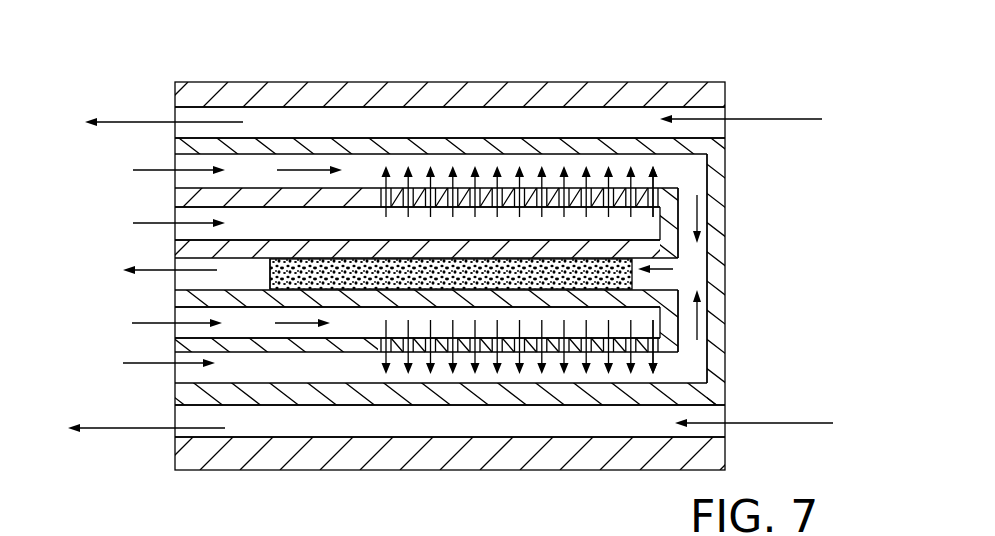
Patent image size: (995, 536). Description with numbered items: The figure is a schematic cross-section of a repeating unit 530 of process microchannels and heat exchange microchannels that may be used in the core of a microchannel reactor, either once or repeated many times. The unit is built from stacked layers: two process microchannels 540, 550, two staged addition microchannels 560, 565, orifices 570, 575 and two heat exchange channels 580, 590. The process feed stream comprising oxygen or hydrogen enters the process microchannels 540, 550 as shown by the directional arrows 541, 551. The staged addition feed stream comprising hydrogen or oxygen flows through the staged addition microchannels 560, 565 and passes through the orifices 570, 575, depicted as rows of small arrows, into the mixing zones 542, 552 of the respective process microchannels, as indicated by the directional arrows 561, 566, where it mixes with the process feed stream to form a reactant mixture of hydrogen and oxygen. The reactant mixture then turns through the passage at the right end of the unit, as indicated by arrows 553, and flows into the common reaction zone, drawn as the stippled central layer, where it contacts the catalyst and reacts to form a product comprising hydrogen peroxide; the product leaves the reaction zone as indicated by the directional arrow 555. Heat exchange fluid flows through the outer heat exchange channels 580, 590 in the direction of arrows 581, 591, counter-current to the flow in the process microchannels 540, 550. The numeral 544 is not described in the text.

The repeating unit 530 is at (208, 71).
The heat exchange channel 590 is at (453, 123).
The directional arrow 591 is at (140, 122).
The process microchannel 550 is at (355, 173).
The directional arrow 551 is at (153, 170).
The orifice 570 is at (593, 185).
The mixing zone 552 is at (528, 170).
The staged addition microchannel 560 is at (258, 222).
The directional arrow 561 is at (155, 223).
The directional arrows 553 is at (697, 217).
The catalyst / electrolyte layer 544 is at (370, 280).
The directional arrow 555 is at (157, 268).
The orifice 575 is at (557, 347).
The directional arrow 566 is at (160, 322).
The staged addition microchannel 565 is at (252, 322).
The process microchannel 540 is at (348, 367).
The mixing zone 542 is at (505, 370).
The directional arrow 541 is at (155, 363).
The heat exchange channel 580 is at (440, 417).
The directional arrow 581 is at (137, 428).